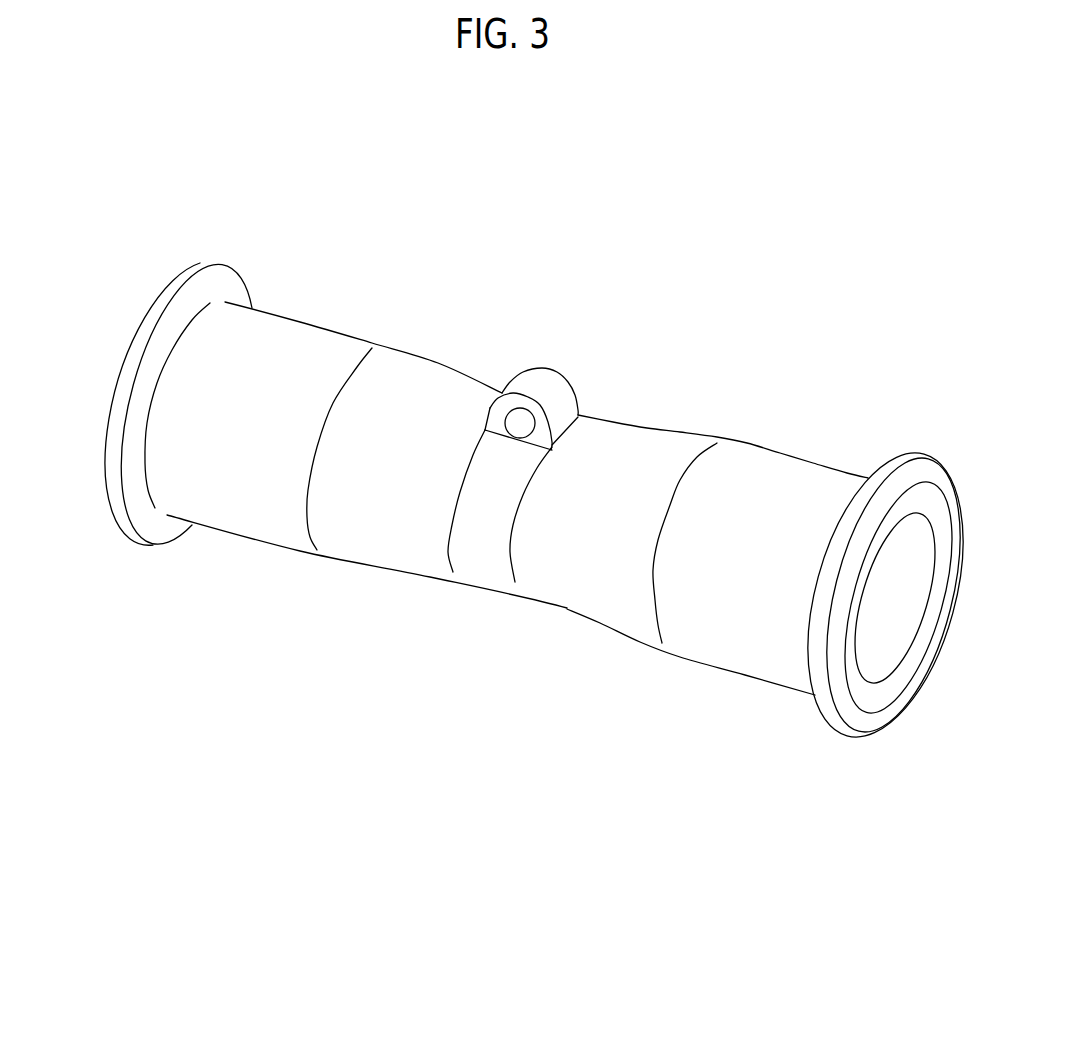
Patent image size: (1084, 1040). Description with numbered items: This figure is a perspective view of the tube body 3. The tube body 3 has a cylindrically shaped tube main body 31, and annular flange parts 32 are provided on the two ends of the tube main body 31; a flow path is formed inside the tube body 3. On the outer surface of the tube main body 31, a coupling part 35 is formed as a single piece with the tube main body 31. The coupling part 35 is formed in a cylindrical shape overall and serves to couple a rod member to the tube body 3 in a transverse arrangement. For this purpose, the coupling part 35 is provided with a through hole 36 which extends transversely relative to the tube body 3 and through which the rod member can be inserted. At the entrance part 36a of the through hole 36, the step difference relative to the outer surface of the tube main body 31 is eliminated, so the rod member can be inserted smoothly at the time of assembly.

The tube body 3 is at (837, 238).
The tube main body 31 is at (577, 587).
The flange parts 32 is at (118, 500).
The coupling part 35 is at (542, 383).
The through hole 36 is at (498, 420).
The entrance part 36a is at (483, 433).